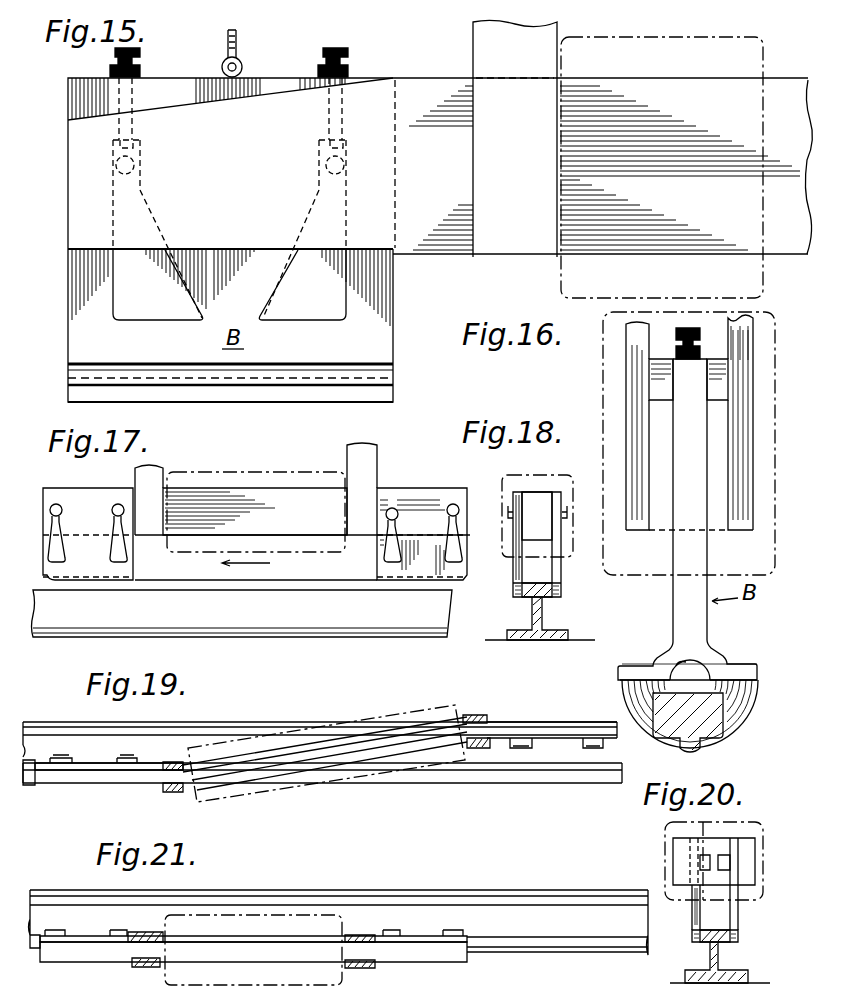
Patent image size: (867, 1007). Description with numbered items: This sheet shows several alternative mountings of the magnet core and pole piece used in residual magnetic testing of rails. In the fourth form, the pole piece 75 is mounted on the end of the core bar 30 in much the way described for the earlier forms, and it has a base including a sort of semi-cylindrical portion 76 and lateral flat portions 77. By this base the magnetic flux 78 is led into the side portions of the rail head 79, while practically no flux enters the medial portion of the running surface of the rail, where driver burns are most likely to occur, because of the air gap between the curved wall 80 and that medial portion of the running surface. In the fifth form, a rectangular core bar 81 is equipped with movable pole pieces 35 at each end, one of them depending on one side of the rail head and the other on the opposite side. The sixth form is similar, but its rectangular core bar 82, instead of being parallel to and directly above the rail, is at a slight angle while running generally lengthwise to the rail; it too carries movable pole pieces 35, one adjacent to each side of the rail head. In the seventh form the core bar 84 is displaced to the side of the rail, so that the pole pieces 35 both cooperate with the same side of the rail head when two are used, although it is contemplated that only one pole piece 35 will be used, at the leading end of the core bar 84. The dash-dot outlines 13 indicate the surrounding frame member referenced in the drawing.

In FIG. 17, the frame member 13 is at (276, 476).
In FIG. 18, the frame member 13 is at (548, 475).
In FIG. 15, the core bar 30 is at (777, 106).
In FIG. 17, the movable pole pieces 35 is at (80, 510).
In FIG. 18, the movable pole pieces 35 is at (513, 576).
In FIG. 19, the movable pole pieces 35 is at (90, 762).
In FIG. 20, the movable pole pieces 35 is at (692, 905).
In FIG. 21, the movable pole pieces 35 is at (90, 936).
In FIG. 15, the pole piece 75 is at (383, 291).
In FIG. 16, the pole piece 75 is at (673, 591).
In FIG. 15, the semi-cylindrical portion 76 is at (342, 364).
In FIG. 16, the semi-cylindrical portion 76 is at (722, 652).
In FIG. 15, the lateral flat portions 77 is at (388, 396).
In FIG. 16, the lateral flat portions 77 is at (745, 668).
In FIG. 16, the magnetic flux 78 is at (745, 691).
In FIG. 16, the rail head 79 is at (740, 718).
In FIG. 19, the rail head 79 is at (495, 762).
In FIG. 20, the rail head 79 is at (728, 940).
In FIG. 21, the rail head 79 is at (480, 912).
In FIG. 16, the curved wall 80 is at (680, 665).
In FIG. 17, the rectangular core bar 81 is at (297, 500).
In FIG. 18, the rectangular core bar 81 is at (533, 502).
In FIG. 19, the rectangular core bar 82 is at (310, 746).
In FIG. 20, the rectangular core bar 82 is at (688, 860).
In FIG. 21, the core bar 84 is at (388, 952).